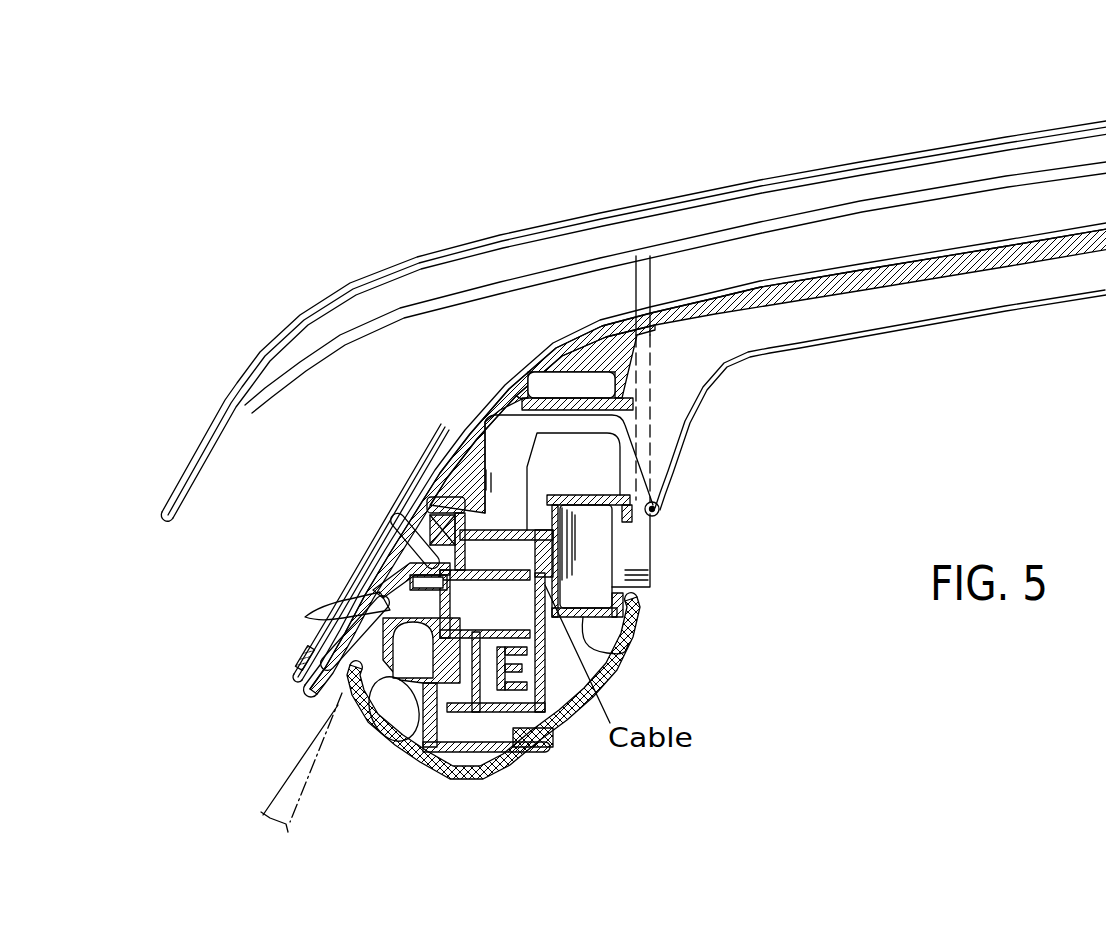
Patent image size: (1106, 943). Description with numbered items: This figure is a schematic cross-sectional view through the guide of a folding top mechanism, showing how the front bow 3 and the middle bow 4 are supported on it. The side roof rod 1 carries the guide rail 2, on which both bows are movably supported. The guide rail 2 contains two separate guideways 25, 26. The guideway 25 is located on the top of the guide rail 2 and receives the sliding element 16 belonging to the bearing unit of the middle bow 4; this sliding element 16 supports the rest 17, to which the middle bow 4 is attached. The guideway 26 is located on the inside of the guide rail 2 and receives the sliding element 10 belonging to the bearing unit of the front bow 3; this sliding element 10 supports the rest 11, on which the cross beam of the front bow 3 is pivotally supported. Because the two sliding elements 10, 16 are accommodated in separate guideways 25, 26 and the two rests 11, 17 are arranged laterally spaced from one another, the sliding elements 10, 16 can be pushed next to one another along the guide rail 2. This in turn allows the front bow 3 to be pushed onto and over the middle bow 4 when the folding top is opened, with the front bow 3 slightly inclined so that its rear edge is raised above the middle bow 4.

The side roof rod 1 is at (480, 712).
The guide rail 2 is at (613, 653).
The front bow 3 is at (583, 224).
The middle bow 4 is at (1030, 268).
The sliding element 10 is at (595, 570).
The rest 11 is at (647, 403).
The sliding element 16 is at (427, 500).
The rest 17 is at (508, 457).
The guideway 25 is at (423, 535).
The guideway 26 is at (590, 505).